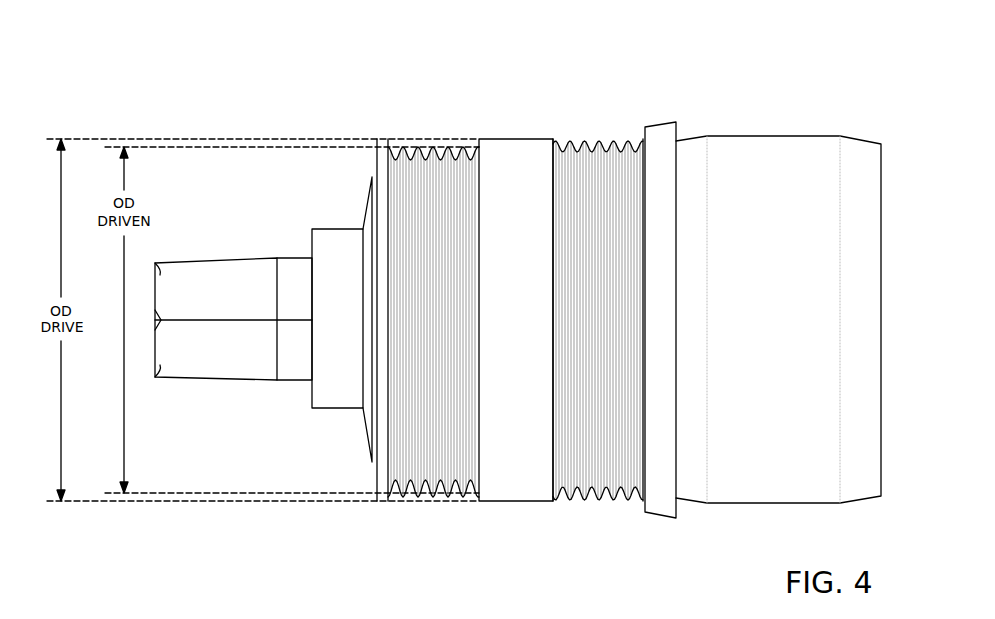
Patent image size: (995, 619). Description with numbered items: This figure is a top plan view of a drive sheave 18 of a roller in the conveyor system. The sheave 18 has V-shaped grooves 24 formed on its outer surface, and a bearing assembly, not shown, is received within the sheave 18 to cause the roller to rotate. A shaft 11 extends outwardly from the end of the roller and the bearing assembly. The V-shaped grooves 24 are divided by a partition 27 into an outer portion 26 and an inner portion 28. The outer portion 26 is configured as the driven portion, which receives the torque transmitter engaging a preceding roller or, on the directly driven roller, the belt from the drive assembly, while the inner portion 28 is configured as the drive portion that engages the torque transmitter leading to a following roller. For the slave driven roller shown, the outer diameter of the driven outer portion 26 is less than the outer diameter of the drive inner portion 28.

The sheave 18 is at (722, 69).
The shaft 11 is at (207, 284).
The V-shaped grooves 24 is at (413, 178).
The outer portion 26 is at (388, 505).
The partition 27 is at (515, 165).
The inner portion 28 is at (556, 520).